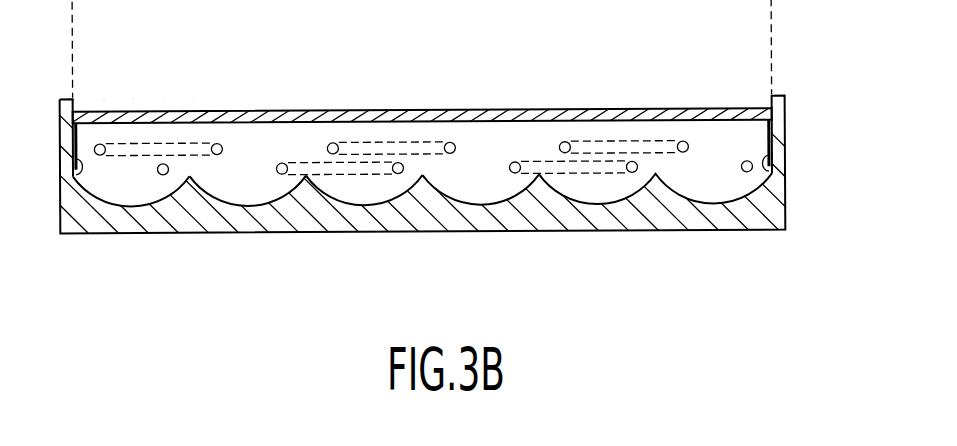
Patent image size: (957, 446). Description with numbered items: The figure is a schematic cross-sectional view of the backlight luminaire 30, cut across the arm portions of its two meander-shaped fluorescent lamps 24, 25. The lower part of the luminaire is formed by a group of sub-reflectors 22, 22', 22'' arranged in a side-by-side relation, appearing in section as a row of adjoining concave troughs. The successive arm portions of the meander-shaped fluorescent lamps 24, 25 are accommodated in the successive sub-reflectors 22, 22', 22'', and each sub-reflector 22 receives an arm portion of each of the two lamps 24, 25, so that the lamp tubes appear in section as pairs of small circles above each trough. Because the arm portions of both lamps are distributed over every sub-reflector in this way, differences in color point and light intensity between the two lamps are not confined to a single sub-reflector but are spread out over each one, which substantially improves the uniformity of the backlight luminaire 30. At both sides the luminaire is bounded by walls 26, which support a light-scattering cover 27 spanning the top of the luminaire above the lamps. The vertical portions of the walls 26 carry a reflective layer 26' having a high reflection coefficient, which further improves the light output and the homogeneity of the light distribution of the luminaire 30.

The sub-reflector 22 is at (131, 231).
The sub-reflector 22' is at (248, 231).
The sub-reflector 22'' is at (364, 230).
The meander-shaped fluorescent lamp 24 is at (100, 141).
The meander-shaped fluorescent lamp 25 is at (632, 174).
The wall 26 is at (428, 133).
The reflective layer 26' is at (430, 174).
The light-scattering cover 27 is at (561, 110).
The backlight luminaire 30 is at (735, 92).